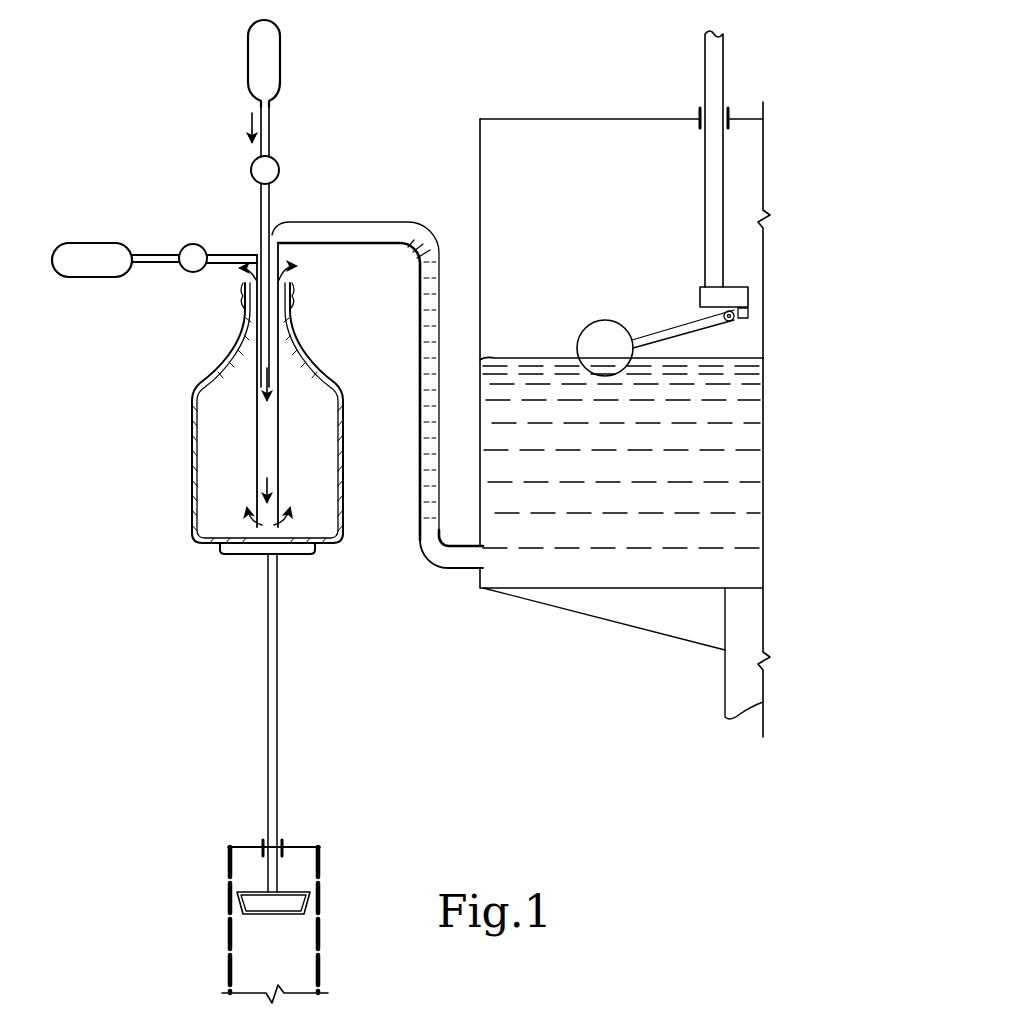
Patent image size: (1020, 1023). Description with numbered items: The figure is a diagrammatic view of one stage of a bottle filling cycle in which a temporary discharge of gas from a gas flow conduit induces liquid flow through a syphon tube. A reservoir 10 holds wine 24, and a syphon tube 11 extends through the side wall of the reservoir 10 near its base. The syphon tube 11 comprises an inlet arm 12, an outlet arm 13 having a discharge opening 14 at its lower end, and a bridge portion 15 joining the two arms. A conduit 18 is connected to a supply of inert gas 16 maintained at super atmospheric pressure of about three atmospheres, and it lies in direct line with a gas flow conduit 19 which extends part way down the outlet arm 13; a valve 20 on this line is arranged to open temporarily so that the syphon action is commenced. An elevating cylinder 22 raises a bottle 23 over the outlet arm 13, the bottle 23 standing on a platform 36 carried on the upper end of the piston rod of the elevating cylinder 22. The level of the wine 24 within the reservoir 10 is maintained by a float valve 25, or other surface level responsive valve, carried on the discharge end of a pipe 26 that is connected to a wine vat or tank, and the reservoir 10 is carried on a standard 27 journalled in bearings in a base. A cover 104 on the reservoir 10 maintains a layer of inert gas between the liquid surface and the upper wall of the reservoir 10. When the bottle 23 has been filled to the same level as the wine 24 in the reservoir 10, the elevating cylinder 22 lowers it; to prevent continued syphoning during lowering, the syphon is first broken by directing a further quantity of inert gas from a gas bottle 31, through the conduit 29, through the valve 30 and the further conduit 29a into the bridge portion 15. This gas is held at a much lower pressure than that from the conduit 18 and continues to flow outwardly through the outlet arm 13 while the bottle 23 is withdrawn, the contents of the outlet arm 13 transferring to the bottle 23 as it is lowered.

The reservoir 10 is at (513, 592).
The syphon tube 11 is at (390, 247).
The inlet arm 12 is at (425, 528).
The outlet arm 13 is at (277, 461).
The discharge opening 14 is at (284, 556).
The bridge portion 15 is at (331, 228).
The supply of inert gas 16 is at (283, 62).
The conduit 18 is at (271, 123).
The gas flow conduit 19 is at (271, 372).
The valve 20 is at (280, 163).
The elevating cylinder 22 is at (322, 873).
The bottle 23 is at (195, 550).
The wine 24 is at (614, 478).
The float valve 25 is at (680, 316).
The pipe 26 is at (705, 185).
The standard 27 is at (730, 685).
The conduit 29 is at (153, 255).
The further conduit 29a is at (219, 268).
The valve 30 is at (203, 250).
The gas bottle 31 is at (102, 238).
The platform 36 is at (313, 556).
The cover 104 is at (530, 120).